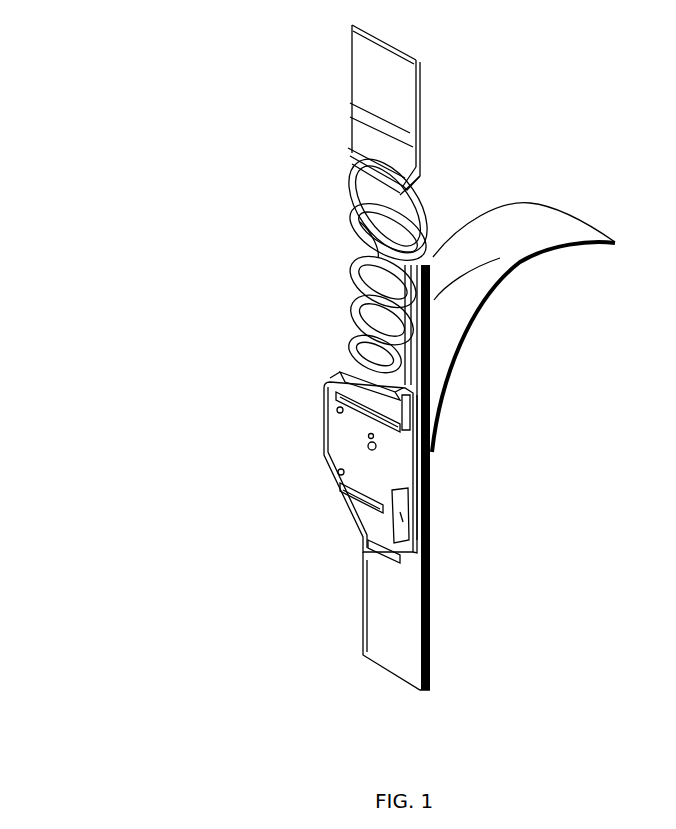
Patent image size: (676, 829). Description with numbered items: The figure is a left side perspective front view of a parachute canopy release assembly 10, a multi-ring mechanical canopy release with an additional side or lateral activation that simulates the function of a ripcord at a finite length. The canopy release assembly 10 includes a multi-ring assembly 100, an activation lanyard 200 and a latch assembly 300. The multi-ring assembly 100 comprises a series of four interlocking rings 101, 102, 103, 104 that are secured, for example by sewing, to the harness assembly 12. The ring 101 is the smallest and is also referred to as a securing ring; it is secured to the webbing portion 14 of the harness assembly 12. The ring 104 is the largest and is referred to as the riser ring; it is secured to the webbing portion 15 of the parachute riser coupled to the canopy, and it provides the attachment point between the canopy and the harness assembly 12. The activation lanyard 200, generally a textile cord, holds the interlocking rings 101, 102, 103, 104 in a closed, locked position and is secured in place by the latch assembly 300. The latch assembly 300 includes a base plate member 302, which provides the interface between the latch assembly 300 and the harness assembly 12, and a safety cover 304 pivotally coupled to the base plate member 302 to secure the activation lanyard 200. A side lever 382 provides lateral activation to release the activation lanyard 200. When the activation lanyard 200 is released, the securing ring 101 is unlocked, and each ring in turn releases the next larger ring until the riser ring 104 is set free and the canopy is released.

The parachute canopy release assembly 10 is at (553, 128).
The harness assembly 12 is at (436, 453).
The webbing portion 14 is at (380, 598).
The webbing portion 15 is at (375, 66).
The multi-ring assembly 100 is at (205, 230).
The ring 101 is at (350, 335).
The ring 102 is at (350, 298).
The ring 103 is at (345, 255).
The riser ring 104 is at (345, 190).
The activation lanyard 200 is at (375, 368).
The latch assembly 300 is at (255, 447).
The base plate member 302 is at (405, 406).
The cover 304 is at (345, 443).
The side lever 382 is at (322, 400).